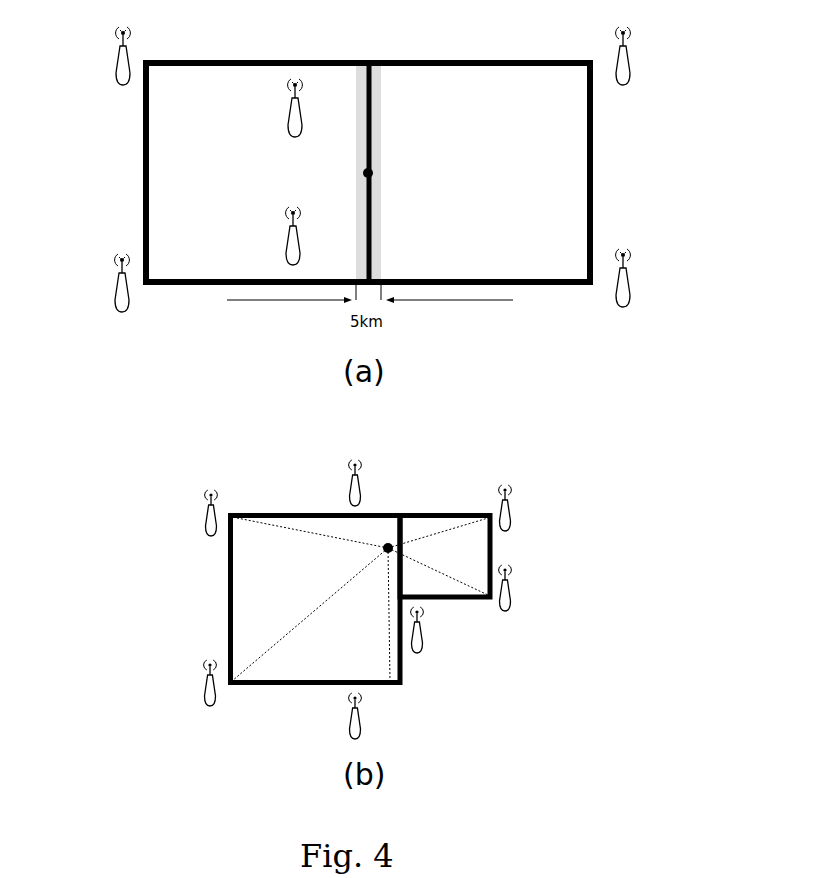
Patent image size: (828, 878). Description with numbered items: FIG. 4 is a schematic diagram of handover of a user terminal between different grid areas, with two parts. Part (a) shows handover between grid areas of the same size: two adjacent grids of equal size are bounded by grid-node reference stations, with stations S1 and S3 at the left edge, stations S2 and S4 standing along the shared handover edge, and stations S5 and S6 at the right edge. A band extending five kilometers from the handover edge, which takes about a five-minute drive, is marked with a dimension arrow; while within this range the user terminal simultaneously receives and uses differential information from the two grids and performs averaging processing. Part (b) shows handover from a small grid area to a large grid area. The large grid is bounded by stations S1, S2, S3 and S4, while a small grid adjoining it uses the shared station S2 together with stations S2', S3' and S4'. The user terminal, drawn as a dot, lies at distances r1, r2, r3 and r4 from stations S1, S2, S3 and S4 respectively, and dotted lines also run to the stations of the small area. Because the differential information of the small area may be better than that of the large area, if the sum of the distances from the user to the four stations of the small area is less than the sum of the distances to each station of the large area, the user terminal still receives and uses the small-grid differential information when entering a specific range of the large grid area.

The first base station / sensor node S1 is at (147, 281).
The second base station / sensor node S2 is at (354, 292).
The third base station / sensor node S3 is at (147, 480).
The fourth base station / sensor node S4 is at (336, 473).
The fifth base station / sensor node S5 is at (640, 56).
The sixth base station / sensor node S6 is at (640, 278).
The second base station (new sub-area) S2' is at (520, 508).
The third base station (new sub-area) S3' is at (432, 630).
The fourth base station (new sub-area) S4' is at (520, 588).
The distance between the first station and the user terminal r1 is at (256, 542).
The distance between the second station and the user terminal r2 is at (356, 532).
The distance between the third station and the user terminal r3 is at (273, 665).
The distance between the fourth station and the user terminal r4 is at (378, 642).